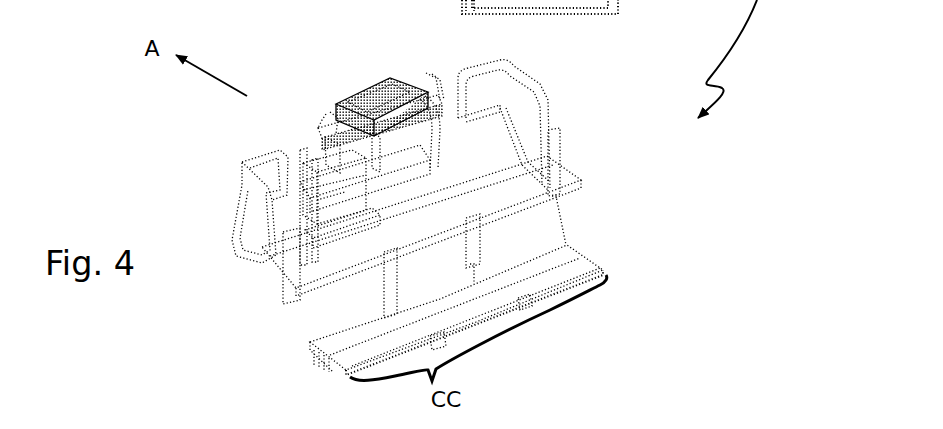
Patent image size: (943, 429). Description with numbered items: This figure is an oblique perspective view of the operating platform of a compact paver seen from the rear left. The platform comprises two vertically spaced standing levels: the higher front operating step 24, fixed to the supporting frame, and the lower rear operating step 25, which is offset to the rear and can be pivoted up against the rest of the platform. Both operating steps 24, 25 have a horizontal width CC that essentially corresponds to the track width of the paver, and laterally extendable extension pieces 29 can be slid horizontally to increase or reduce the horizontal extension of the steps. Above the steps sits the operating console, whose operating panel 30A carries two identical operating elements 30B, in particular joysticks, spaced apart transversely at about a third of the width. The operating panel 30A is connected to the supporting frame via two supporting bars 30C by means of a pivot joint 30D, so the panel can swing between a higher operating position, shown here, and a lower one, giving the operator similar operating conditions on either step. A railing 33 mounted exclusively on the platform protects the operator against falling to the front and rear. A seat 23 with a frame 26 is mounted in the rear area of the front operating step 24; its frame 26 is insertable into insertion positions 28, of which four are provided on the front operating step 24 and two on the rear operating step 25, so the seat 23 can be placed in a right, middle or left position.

The seat 23 is at (338, 189).
The front operating step 24 is at (512, 181).
The rear operating step 25 is at (567, 265).
The frame 26 is at (309, 232).
The insertion positions 28 is at (470, 223).
The extension pieces 29 is at (366, 342).
The operating panel 30A is at (363, 106).
The operating elements 30B is at (427, 75).
The supporting bars 30C is at (427, 164).
The pivot joint 30D is at (415, 187).
The railing 33 is at (247, 199).